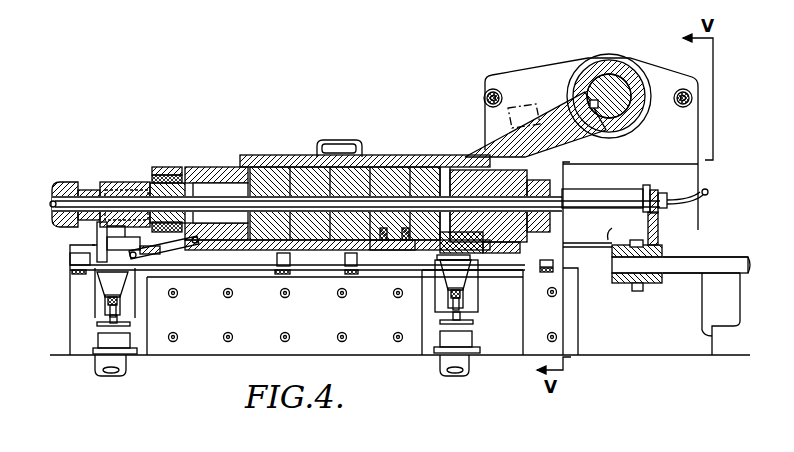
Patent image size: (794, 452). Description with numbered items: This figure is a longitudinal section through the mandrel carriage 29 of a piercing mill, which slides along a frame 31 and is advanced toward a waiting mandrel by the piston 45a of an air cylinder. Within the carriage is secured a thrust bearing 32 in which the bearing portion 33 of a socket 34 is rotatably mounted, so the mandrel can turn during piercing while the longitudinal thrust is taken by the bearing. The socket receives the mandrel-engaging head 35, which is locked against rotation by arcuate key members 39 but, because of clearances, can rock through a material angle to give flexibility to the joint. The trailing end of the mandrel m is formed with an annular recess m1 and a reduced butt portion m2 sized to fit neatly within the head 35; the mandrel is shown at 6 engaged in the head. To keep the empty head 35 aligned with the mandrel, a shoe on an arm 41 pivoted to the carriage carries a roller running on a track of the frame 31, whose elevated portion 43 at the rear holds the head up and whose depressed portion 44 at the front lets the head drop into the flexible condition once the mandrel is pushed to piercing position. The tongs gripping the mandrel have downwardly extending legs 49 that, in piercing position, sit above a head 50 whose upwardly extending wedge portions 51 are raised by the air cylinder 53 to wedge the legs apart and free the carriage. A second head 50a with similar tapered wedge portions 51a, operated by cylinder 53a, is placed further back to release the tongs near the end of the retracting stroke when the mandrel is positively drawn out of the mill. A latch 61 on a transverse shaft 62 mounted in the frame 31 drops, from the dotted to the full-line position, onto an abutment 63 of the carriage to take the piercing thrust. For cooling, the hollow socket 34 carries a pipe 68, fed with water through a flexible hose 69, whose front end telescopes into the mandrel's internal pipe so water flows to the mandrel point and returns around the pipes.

The shaft 6 is at (50, 205).
The nozzle nut m is at (58, 183).
The annular recess m1 is at (100, 164).
The reduced butt portion m2 is at (132, 181).
The mandrel-engaging head 35 is at (110, 182).
The arcuate key members 39 is at (152, 174).
The socket 34 is at (178, 167).
The bearing portion 33 is at (262, 157).
The thrust bearing 32 is at (312, 178).
The mandrel carriage 29 is at (405, 155).
The abutment 63 is at (485, 157).
The latch 61 is at (515, 108).
The transverse shaft 62 is at (605, 98).
The frame 31 is at (695, 118).
The pipe 68 is at (590, 206).
The flexible hose 69 is at (706, 195).
The piston 45a is at (720, 262).
The legs 49 is at (97, 237).
The arm 41 is at (175, 251).
The depressed portion 44 is at (248, 271).
The elevated portion 43 is at (392, 265).
The wedge portions 51 is at (106, 282).
The head 50 is at (121, 300).
The air cylinder 53 is at (125, 366).
The wedge portions 51a is at (462, 278).
The second head 50a is at (462, 293).
The cylinder 53a is at (466, 366).